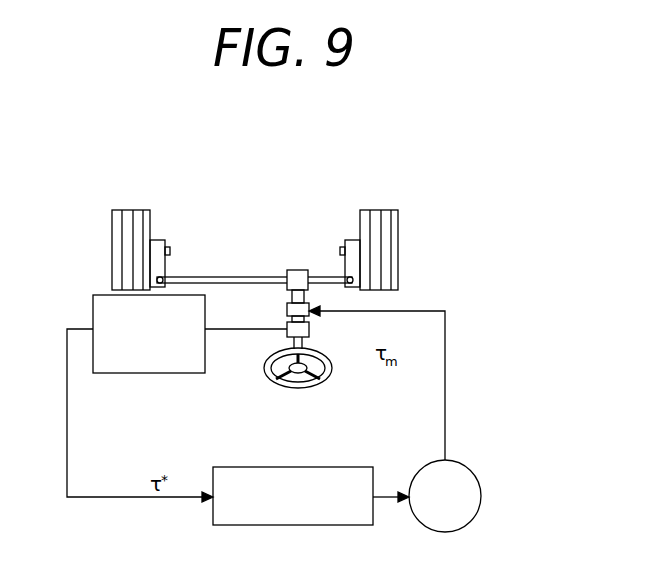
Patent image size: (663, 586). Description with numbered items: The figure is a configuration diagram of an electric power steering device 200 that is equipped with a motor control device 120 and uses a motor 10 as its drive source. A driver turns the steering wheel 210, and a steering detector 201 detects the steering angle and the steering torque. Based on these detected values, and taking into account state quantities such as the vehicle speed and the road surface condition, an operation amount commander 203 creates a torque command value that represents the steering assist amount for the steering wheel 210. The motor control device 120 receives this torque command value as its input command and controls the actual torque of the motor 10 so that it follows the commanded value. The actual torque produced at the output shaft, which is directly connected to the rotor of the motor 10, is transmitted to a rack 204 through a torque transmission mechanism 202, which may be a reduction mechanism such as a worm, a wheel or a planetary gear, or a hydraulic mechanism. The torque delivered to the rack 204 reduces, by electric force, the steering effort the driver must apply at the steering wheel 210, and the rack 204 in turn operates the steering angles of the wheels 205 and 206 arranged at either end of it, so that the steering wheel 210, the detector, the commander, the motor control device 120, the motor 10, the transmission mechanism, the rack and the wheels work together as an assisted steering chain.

The electric power steering device 200 is at (494, 334).
The steering detector 201 is at (287, 333).
The torque transmission mechanism 202 is at (287, 312).
The operation amount commander 203 is at (149, 373).
The rack 204 is at (229, 277).
The wheel 205 is at (112, 251).
The wheel 206 is at (398, 250).
The steering wheel 210 is at (330, 376).
The motor control device 120 is at (293, 467).
The motor 10 is at (481, 496).